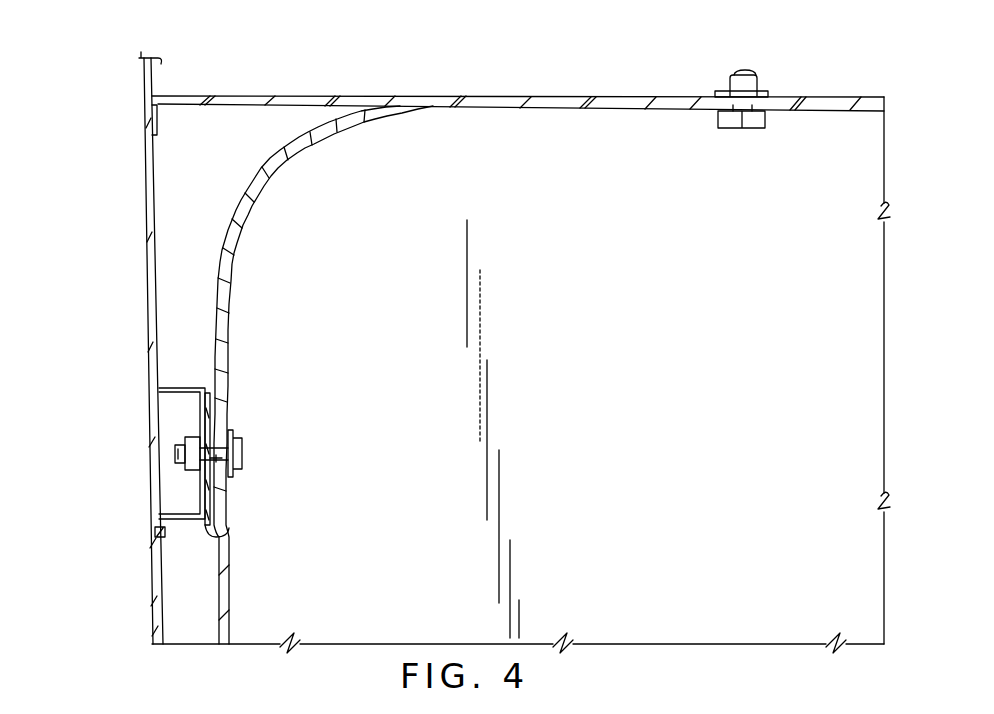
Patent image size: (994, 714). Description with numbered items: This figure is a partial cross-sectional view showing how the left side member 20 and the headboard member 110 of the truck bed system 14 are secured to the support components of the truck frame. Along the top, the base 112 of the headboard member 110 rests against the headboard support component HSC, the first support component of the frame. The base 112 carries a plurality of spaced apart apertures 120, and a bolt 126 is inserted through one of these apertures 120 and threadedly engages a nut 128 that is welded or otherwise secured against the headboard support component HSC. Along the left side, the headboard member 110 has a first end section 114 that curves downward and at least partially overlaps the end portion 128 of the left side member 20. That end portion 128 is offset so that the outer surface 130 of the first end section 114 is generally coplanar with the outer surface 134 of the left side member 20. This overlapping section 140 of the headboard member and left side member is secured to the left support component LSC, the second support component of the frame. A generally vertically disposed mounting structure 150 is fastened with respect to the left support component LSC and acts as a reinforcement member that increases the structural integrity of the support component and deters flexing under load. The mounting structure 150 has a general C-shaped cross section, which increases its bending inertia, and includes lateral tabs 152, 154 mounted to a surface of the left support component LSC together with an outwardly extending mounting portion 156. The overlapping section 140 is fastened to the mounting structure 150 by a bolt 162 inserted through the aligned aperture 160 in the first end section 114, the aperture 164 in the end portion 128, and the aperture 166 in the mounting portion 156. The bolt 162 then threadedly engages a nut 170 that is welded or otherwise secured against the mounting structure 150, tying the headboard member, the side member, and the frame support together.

The left support component LSC is at (94, 199).
The headboard support component HSC is at (562, 92).
The base 112 is at (576, 110).
The aperture 120 is at (770, 97).
The nut 128 is at (724, 90).
The bolt 126 is at (733, 162).
The headboard member 110 is at (520, 200).
The awning panel 14 is at (604, 417).
The outer surface of the first end section 130 is at (228, 326).
The first end section 114 is at (228, 353).
The lateral tab 152 is at (165, 386).
The mounting portion 156 is at (193, 434).
The lateral tab 154 is at (157, 540).
The mounting structure 150 is at (187, 545).
The overlapping section 140 is at (294, 438).
The nut 170 is at (183, 436).
The aperture 160 is at (228, 434).
The bolt 162 is at (244, 460).
The aperture 166 is at (210, 470).
The aperture 164 is at (219, 481).
The outer surface of the left side member 134 is at (232, 565).
The left side member 20 is at (232, 609).